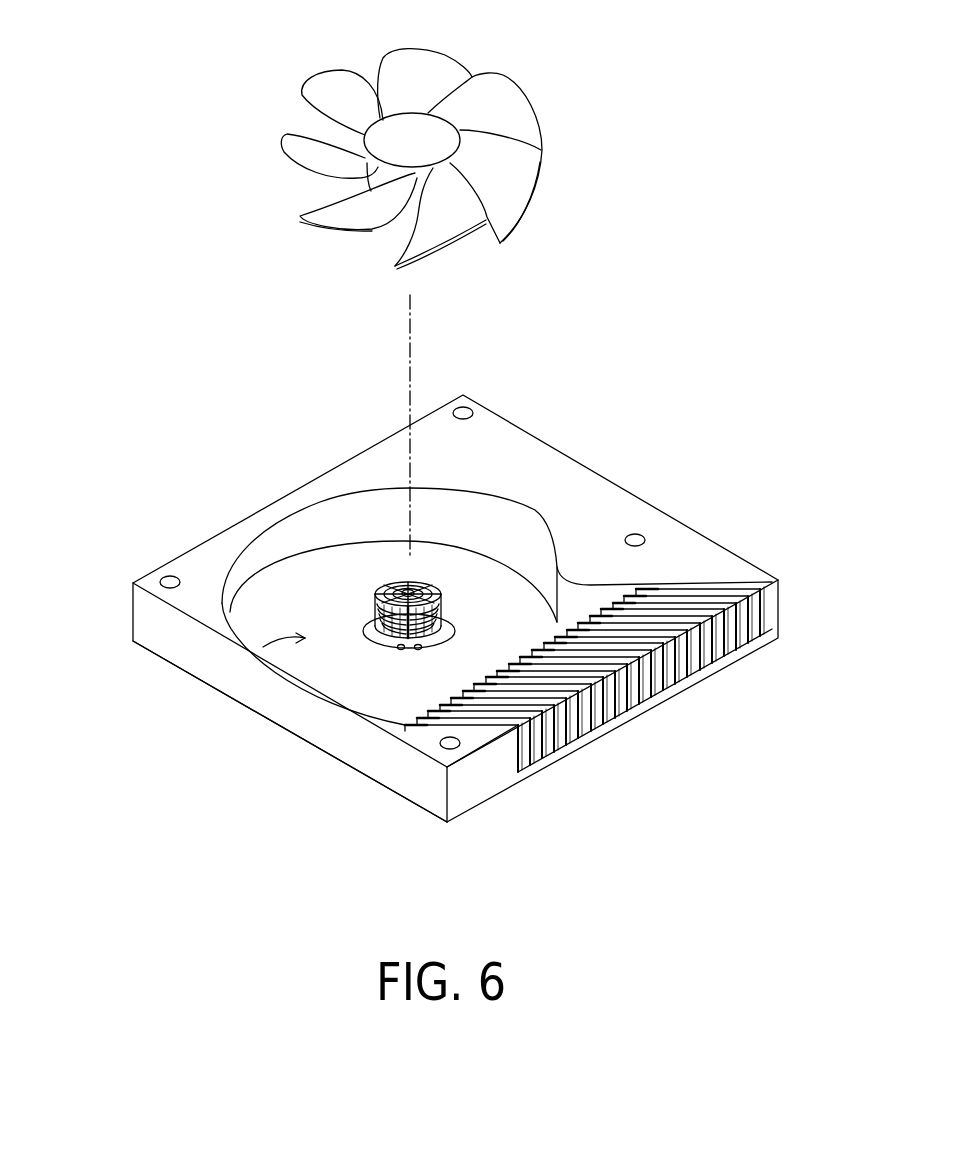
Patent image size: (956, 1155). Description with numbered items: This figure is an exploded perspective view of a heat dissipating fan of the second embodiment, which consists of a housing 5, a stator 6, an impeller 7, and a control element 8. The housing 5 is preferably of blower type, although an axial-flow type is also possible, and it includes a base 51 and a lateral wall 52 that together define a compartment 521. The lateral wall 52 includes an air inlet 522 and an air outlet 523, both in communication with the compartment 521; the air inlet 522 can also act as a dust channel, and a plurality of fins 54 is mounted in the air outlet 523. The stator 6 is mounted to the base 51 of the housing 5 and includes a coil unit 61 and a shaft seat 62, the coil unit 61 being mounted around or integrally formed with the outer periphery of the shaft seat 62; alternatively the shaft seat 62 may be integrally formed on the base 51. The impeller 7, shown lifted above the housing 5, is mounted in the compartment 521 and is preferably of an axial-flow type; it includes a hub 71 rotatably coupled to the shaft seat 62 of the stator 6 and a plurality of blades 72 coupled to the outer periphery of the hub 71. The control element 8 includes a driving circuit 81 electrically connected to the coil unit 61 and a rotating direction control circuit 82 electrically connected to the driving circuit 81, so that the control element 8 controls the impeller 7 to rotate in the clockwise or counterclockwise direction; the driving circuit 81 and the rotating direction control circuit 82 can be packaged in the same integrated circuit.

The housing 5 is at (149, 558).
The base 51 is at (262, 597).
The lateral wall 52 is at (345, 739).
The compartment 521 is at (263, 647).
The air inlet 522 is at (492, 503).
The air outlet 523 is at (606, 702).
The fins 54 is at (728, 648).
The stator 6 is at (424, 506).
The coil unit 61 is at (388, 583).
The shaft seat 62 is at (412, 587).
The impeller 7 is at (364, 136).
The hub 71 is at (383, 130).
The blades 72 is at (316, 92).
The control element 8 is at (492, 775).
The driving circuit 81 is at (403, 652).
The rotating direction control circuit 82 is at (420, 652).